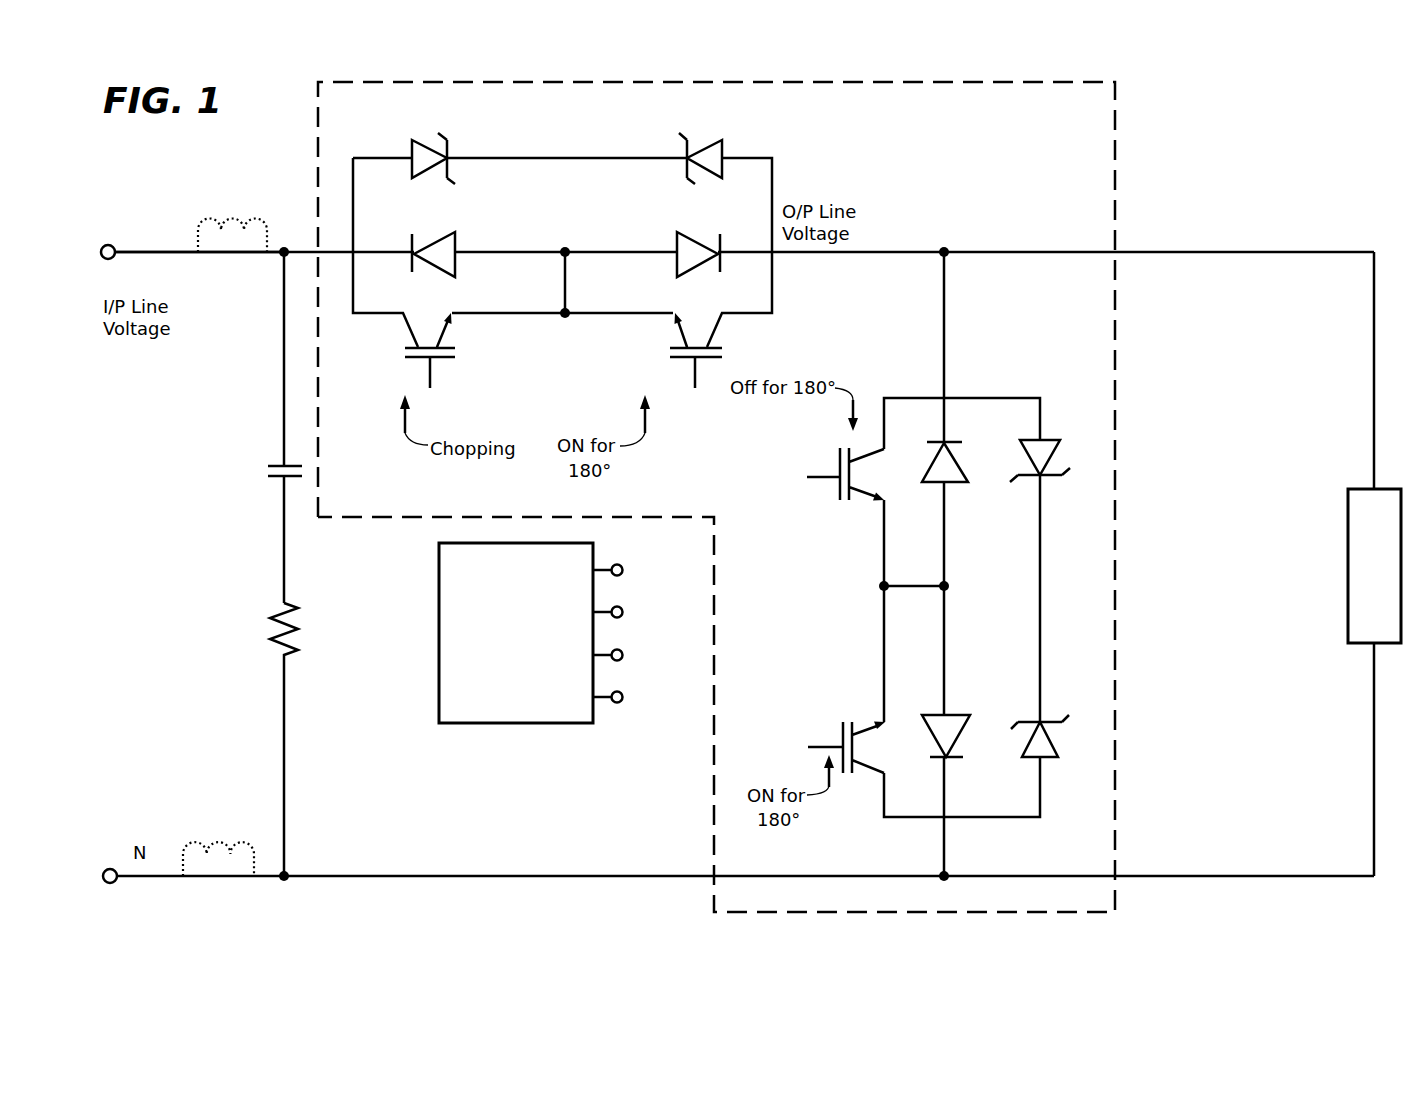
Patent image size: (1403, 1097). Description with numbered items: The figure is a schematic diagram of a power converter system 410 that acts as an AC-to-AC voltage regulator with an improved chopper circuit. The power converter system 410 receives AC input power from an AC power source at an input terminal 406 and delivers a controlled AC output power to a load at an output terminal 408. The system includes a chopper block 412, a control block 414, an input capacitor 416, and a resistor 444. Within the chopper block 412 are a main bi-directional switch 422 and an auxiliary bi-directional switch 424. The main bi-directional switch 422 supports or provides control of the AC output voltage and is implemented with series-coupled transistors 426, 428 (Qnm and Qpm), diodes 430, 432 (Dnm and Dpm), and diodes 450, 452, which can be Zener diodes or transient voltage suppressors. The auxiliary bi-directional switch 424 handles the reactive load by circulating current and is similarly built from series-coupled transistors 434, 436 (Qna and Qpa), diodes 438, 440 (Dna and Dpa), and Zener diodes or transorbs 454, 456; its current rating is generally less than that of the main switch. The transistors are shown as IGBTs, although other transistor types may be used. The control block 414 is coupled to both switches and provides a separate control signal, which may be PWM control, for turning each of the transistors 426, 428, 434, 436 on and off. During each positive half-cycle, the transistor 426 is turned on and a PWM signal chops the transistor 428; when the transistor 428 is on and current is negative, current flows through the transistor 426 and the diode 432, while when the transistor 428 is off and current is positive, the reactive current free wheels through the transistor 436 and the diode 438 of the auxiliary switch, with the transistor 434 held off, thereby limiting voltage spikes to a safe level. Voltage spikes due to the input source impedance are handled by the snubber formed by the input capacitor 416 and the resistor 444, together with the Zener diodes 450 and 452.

The input terminal 406 is at (172, 258).
The output terminal 408 is at (1331, 250).
The power converter system 410 is at (186, 166).
The chopper block 412 is at (1116, 183).
The control block 414 is at (438, 629).
The input capacitor 416 is at (278, 479).
The main bi-directional switch 422 is at (773, 192).
The auxiliary bi-directional switch 424 is at (987, 398).
The transistor 426 is at (670, 358).
The transistor 428 is at (404, 358).
The diode 430 is at (693, 231).
The diode 432 is at (440, 234).
The transistor 434 is at (840, 448).
The transistor 436 is at (843, 722).
The diode 438 is at (955, 485).
The diode 440 is at (950, 715).
The resistor 444 is at (277, 656).
The diode 450 is at (429, 140).
The diode 452 is at (708, 140).
The diode 454 is at (1048, 440).
The diode 456 is at (1049, 760).